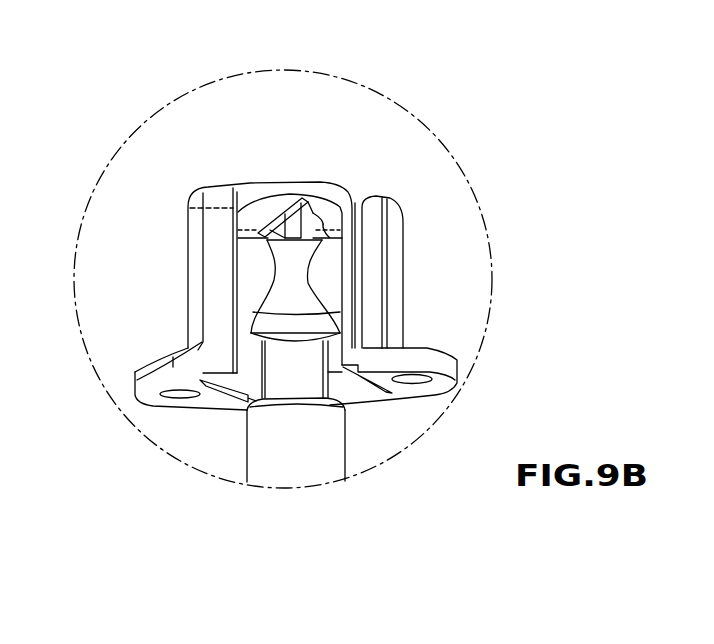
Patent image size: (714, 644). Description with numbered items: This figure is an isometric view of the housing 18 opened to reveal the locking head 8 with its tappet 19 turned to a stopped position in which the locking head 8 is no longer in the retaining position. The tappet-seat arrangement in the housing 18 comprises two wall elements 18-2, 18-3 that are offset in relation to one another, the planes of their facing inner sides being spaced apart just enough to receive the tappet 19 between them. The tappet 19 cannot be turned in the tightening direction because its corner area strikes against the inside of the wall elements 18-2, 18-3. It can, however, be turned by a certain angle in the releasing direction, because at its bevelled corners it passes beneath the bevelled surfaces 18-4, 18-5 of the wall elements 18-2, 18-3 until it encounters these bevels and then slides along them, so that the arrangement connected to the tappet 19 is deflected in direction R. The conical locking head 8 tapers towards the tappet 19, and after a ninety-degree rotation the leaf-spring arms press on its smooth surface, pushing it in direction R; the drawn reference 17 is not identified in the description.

The housing 18 is at (193, 203).
The wall element 18-2 is at (255, 220).
The wall element 18-3 is at (327, 215).
The bevelled surface 18-4 is at (280, 218).
The bevelled surface 18-5 is at (310, 223).
The tappet 19 is at (305, 213).
The locking head 8 is at (320, 322).
The shaft 17 is at (292, 495).